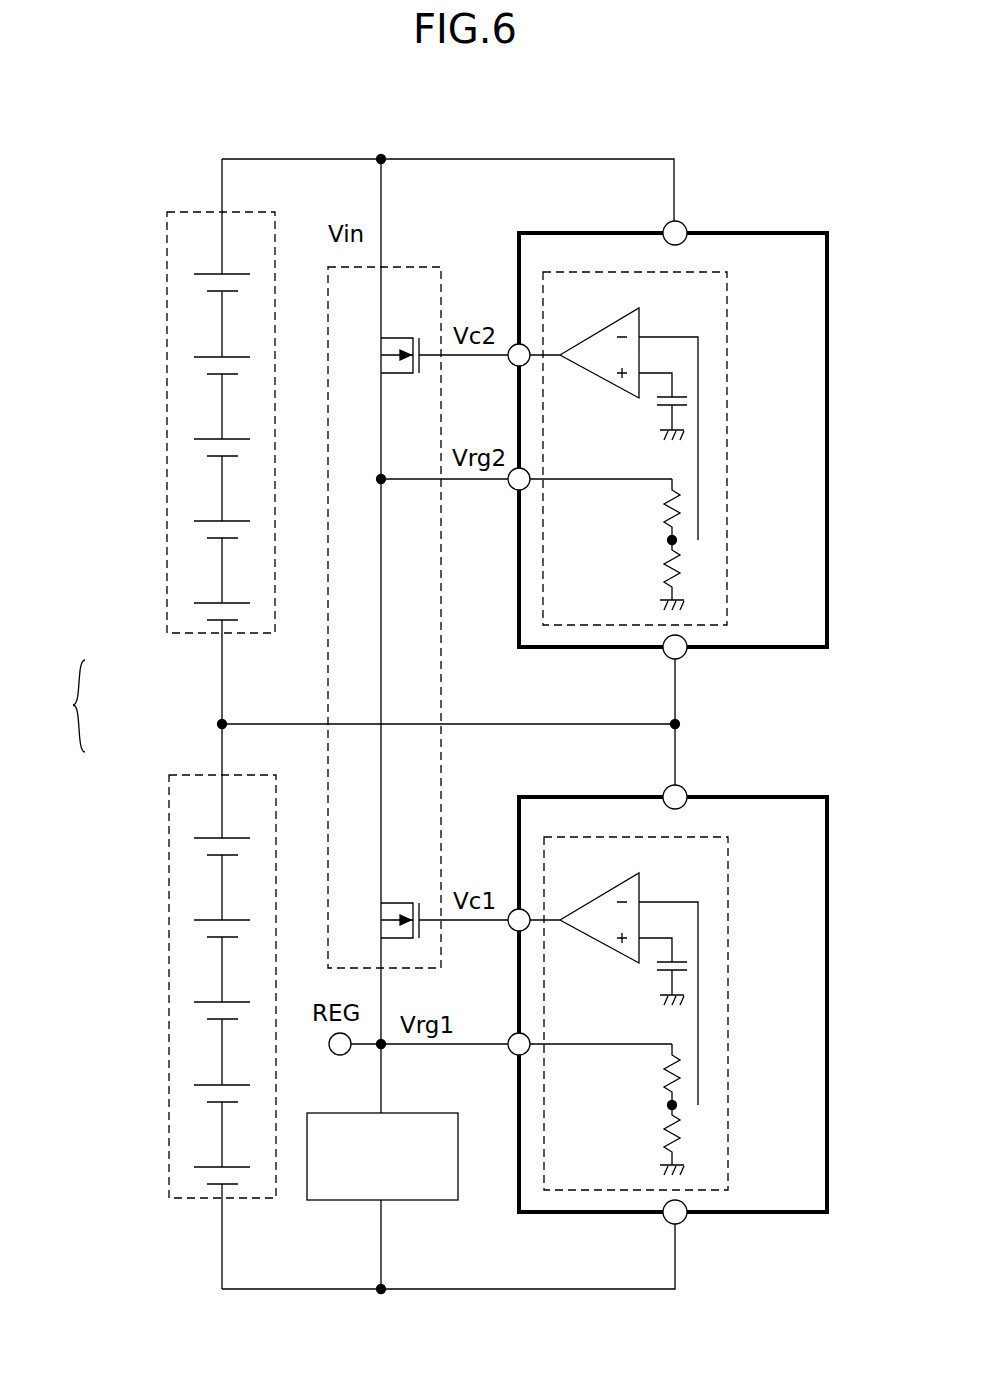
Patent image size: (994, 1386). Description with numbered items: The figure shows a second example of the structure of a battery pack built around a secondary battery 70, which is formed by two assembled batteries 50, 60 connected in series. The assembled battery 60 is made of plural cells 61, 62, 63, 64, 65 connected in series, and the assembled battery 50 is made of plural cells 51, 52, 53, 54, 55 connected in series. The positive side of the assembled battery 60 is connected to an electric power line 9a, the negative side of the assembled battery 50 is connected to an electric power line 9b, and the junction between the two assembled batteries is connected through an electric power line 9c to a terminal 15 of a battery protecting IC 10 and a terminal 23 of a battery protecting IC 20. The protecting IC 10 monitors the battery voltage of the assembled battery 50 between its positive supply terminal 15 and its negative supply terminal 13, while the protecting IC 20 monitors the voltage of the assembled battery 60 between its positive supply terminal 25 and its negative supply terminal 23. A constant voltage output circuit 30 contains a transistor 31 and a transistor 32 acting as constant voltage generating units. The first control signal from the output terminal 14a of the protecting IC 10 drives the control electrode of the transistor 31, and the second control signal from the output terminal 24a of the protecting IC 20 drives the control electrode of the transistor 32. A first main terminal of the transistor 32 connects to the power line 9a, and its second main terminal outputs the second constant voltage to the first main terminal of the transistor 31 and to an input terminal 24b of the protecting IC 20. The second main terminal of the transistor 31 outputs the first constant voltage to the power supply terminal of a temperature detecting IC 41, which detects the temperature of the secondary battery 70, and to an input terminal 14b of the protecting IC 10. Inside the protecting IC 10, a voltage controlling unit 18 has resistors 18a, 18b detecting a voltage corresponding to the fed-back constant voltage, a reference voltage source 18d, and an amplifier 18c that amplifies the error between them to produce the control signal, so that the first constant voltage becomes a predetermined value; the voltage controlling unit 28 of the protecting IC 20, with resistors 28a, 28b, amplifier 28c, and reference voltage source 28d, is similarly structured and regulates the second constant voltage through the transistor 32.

The electric power line 9a is at (507, 159).
The electric power line 9b is at (508, 1289).
The electric power line 9c is at (470, 724).
The battery protecting IC 10 is at (790, 797).
The terminal 13 is at (668, 1225).
The output terminal 14a is at (512, 931).
The input terminal 14b is at (512, 1056).
The terminal 15 is at (664, 789).
The voltage controlling unit 18 is at (730, 869).
The resistor 18a is at (662, 1077).
The resistor 18b is at (662, 1135).
The amplifier 18c is at (606, 895).
The reference voltage source 18d is at (656, 983).
The battery protecting IC 20 is at (785, 232).
The terminal 23 is at (667, 660).
The output terminal 24a is at (512, 366).
The input terminal 24b is at (512, 491).
The terminal 25 is at (664, 224).
The voltage controlling unit 28 is at (730, 303).
The resistor 28a is at (662, 572).
The resistor 28b is at (662, 512).
The amplifier 28c is at (606, 330).
The reference voltage source 28d is at (656, 418).
The constant voltage output circuit 30 is at (443, 786).
The transistor 31 is at (419, 903).
The transistor 32 is at (419, 338).
The temperature detecting IC 41 is at (398, 1201).
The assembled battery 50 is at (196, 770).
The cell 51 is at (214, 836).
The cell 52 is at (214, 918).
The cell 53 is at (214, 1000).
The cell 54 is at (214, 1083).
The cell 55 is at (214, 1165).
The assembled battery 60 is at (193, 642).
The cell 61 is at (214, 272).
The cell 62 is at (214, 355).
The cell 63 is at (214, 437).
The cell 64 is at (214, 519).
The cell 65 is at (214, 601).
The secondary battery 70 is at (61, 706).